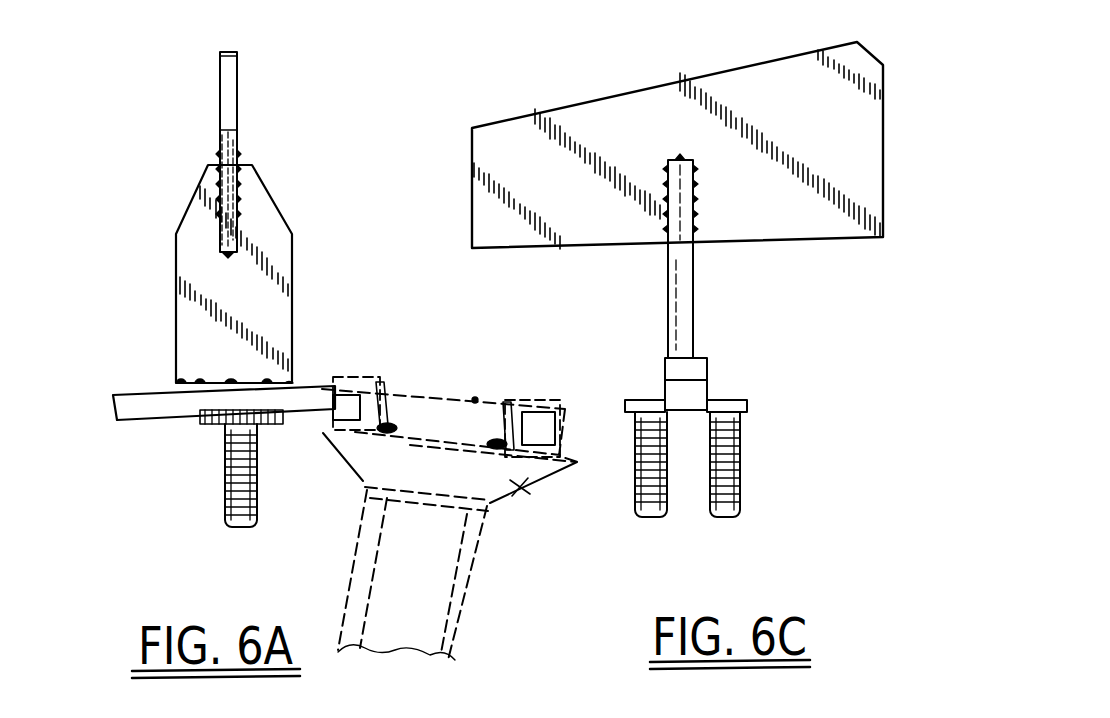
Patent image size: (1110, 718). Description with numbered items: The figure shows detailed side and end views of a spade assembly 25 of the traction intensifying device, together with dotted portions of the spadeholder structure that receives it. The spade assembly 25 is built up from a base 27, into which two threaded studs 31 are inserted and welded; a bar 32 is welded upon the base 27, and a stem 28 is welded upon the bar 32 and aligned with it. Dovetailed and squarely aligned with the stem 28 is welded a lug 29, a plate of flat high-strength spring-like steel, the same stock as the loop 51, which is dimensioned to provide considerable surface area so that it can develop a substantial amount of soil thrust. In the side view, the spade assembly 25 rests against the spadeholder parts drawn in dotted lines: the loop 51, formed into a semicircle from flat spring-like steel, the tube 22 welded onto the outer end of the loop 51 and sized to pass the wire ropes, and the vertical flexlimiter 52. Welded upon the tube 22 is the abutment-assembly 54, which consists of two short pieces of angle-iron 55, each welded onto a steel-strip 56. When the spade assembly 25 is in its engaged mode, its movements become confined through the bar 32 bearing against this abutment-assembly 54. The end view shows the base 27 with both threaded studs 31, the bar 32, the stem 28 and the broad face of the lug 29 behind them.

In FIG. 6A, the tube 22 is at (503, 480).
In FIG. 6A, the spade-assembly 25 is at (140, 123).
In FIG. 6C, the spade-assembly 25 is at (506, 98).
In FIG. 6A, the base 27 is at (178, 436).
In FIG. 6C, the base 27 is at (625, 400).
In FIG. 6A, the stem 28 is at (184, 216).
In FIG. 6C, the stem 28 is at (670, 280).
In FIG. 6A, the lug 29 is at (220, 78).
In FIG. 6C, the lug 29 is at (660, 85).
In FIG. 6A, the threaded stud 31 is at (225, 511).
In FIG. 6C, the threaded stud 31 is at (715, 517).
In FIG. 6A, the bar 32 is at (158, 380).
In FIG. 6C, the bar 32 is at (712, 372).
In FIG. 6A, the loop 51 is at (340, 603).
In FIG. 6A, the vertical flexlimiter 52 is at (430, 567).
In FIG. 6A, the abutment-assembly 54 is at (420, 378).
In FIG. 6A, the angle-iron 55 is at (380, 382).
In FIG. 6A, the steel-strip 56 is at (475, 400).